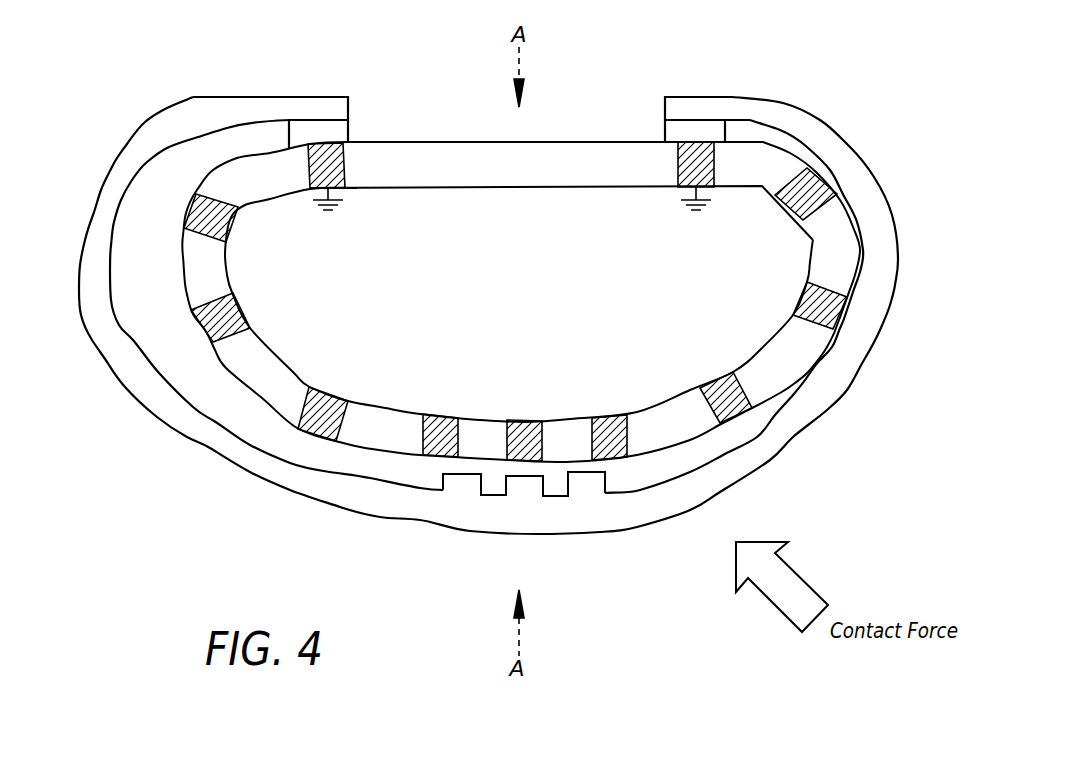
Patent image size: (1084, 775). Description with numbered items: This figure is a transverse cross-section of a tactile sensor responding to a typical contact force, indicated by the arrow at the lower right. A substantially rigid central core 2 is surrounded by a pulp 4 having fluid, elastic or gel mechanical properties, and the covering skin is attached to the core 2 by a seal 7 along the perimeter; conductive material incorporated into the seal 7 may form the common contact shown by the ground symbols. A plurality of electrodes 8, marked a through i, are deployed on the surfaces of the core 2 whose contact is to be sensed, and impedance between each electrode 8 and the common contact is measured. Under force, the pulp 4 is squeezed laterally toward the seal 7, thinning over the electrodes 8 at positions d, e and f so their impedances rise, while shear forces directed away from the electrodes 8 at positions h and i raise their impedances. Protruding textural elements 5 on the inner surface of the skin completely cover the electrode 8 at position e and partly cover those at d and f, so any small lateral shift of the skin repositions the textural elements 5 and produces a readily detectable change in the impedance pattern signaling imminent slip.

The central core 2 is at (848, 249).
The pulp 4 is at (488, 354).
The textural elements 5 is at (589, 523).
The seal 7 is at (325, 114).
The electrodes 8 is at (302, 467).